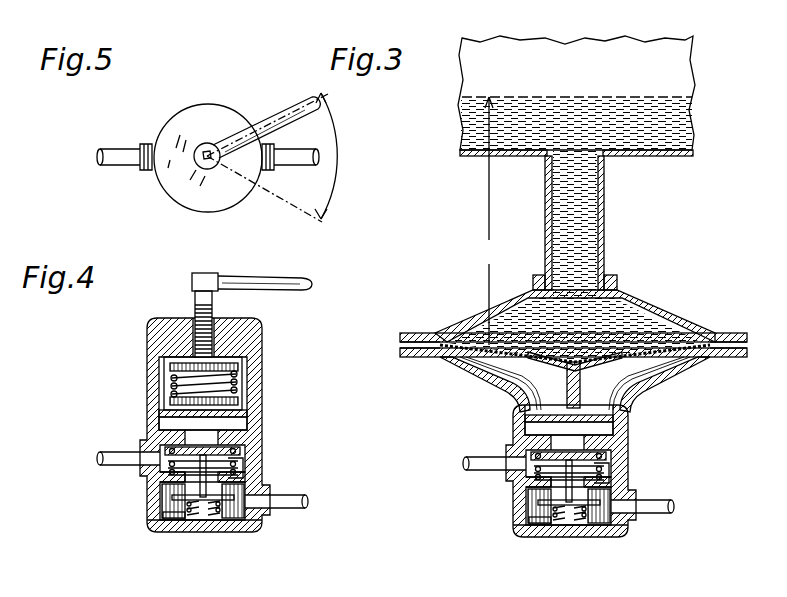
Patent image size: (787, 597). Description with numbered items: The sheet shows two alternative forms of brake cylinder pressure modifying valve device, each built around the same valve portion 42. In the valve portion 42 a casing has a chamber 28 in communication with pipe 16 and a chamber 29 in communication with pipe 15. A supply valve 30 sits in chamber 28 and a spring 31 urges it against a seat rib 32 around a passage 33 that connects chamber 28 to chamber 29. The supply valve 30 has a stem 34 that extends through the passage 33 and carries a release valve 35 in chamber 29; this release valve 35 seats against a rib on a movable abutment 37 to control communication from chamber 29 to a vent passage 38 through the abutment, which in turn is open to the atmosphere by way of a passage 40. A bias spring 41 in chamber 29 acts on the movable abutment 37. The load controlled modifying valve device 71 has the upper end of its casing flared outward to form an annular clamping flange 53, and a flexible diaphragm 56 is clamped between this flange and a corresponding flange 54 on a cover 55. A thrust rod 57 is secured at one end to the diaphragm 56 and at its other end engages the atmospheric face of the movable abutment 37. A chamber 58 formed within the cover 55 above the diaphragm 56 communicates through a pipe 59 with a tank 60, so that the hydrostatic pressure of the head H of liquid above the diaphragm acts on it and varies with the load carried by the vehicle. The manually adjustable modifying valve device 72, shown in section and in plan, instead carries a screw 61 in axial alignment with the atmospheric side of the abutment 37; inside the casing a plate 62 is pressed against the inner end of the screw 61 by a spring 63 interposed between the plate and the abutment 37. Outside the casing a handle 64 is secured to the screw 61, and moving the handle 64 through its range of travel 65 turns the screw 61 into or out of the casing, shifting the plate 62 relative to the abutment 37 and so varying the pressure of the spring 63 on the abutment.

In FIG. 4, the pipe 15 is at (105, 457).
In FIG. 3, the pipe 15 is at (467, 458).
In FIG. 4, the pipe 16 is at (306, 499).
In FIG. 3, the pipe 16 is at (676, 504).
In FIG. 4, the chamber 28 is at (252, 532).
In FIG. 3, the chamber 28 is at (586, 545).
In FIG. 4, the chamber 29 is at (208, 450).
In FIG. 3, the chamber 29 is at (600, 479).
In FIG. 4, the supply valve 30 is at (178, 533).
In FIG. 3, the supply valve 30 is at (548, 536).
In FIG. 4, the spring 31 is at (235, 522).
In FIG. 3, the spring 31 is at (575, 527).
In FIG. 4, the seat rib 32 is at (190, 498).
In FIG. 3, the seat rib 32 is at (536, 518).
In FIG. 4, the passage 33 is at (183, 487).
In FIG. 3, the passage 33 is at (512, 506).
In FIG. 4, the stem 34 is at (165, 476).
In FIG. 3, the stem 34 is at (542, 487).
In FIG. 4, the release valve 35 is at (240, 452).
In FIG. 3, the release valve 35 is at (599, 449).
In FIG. 4, the movable abutment 37 is at (248, 413).
In FIG. 3, the movable abutment 37 is at (594, 418).
In FIG. 4, the vent passage 38 is at (160, 423).
In FIG. 3, the vent passage 38 is at (543, 424).
In FIG. 4, the passage 40 is at (262, 360).
In FIG. 3, the passage 40 is at (665, 381).
In FIG. 4, the bias spring 41 is at (240, 462).
In FIG. 3, the bias spring 41 is at (630, 478).
In FIG. 4, the valve portion 42 is at (172, 520).
In FIG. 3, the valve portion 42 is at (512, 541).
In FIG. 3, the annular clamping flange 53 is at (746, 358).
In FIG. 3, the flange 54 is at (741, 334).
In FIG. 3, the cover 55 is at (700, 331).
In FIG. 3, the flexible diaphragm 56 is at (604, 368).
In FIG. 3, the thrust rod 57 is at (567, 390).
In FIG. 3, the chamber 58 is at (650, 310).
In FIG. 3, the pipe 59 is at (604, 226).
In FIG. 3, the tank 60 is at (640, 157).
In FIG. 4, the screw 61 is at (213, 303).
In FIG. 4, the plate 62 is at (240, 368).
In FIG. 4, the spring 63 is at (240, 384).
In FIG. 5, the handle 64 is at (288, 100).
In FIG. 4, the handle 64 is at (296, 273).
In FIG. 5, the range of travel 65 is at (334, 168).
In FIG. 3, the load controlled brake cylinder pressure modifying valve device 71 is at (505, 398).
In FIG. 5, the manually adjustable modifying valve device 72 is at (173, 115).
In FIG. 4, the manually adjustable modifying valve device 72 is at (160, 318).
In FIG. 3, the head H is at (488, 221).